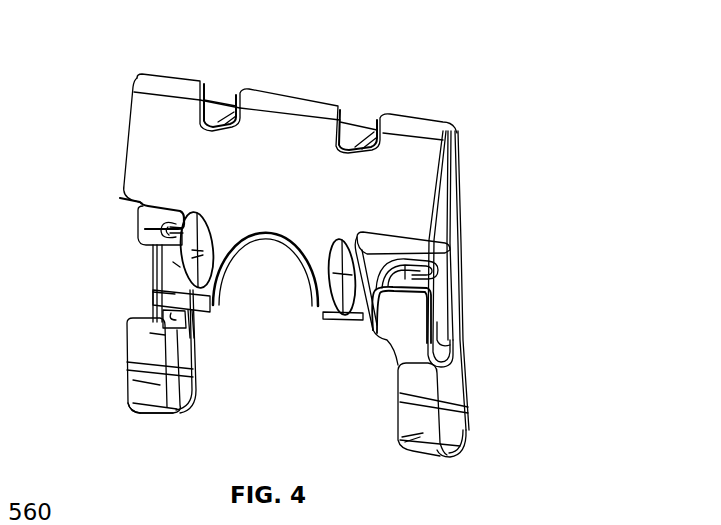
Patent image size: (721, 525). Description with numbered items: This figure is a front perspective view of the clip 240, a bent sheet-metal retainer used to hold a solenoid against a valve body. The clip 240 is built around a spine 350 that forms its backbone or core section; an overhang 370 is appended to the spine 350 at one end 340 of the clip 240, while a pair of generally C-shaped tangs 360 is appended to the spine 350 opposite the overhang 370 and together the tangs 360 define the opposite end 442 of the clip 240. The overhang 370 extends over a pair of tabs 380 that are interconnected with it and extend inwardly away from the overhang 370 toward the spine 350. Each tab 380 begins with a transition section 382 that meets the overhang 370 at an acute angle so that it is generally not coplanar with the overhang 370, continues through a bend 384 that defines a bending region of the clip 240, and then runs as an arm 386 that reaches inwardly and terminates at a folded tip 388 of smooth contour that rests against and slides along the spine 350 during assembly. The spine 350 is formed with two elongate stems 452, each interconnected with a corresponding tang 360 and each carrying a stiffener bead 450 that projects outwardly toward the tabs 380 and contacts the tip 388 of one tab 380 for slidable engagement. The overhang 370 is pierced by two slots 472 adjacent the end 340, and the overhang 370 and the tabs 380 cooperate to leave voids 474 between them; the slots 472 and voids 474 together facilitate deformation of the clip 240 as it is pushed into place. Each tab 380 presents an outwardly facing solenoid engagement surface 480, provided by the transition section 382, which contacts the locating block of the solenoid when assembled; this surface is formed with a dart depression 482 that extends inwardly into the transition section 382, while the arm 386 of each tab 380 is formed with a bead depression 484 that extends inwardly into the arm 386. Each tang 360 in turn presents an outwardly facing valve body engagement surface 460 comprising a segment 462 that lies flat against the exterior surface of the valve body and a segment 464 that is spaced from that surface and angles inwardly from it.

The clip 240 is at (350, 62).
The end of the clip 340 is at (427, 127).
The spine 350 is at (461, 160).
The tangs 360 is at (178, 382).
The overhang 370 is at (227, 147).
The tabs 380 is at (157, 277).
The transition section 382 is at (313, 270).
The bend 384 is at (212, 306).
The arm 386 is at (430, 302).
The tip 388 is at (453, 245).
The end of the clip 442 is at (167, 413).
The stiffener beads 450 is at (163, 316).
The elongate stem 452 is at (150, 260).
The valve body engagement surface 460 is at (153, 390).
The segment 462 is at (143, 383).
The segment 464 is at (150, 333).
The slots 472 is at (217, 100).
The voids 474 is at (180, 217).
The solenoid engagement surface 480 is at (173, 292).
The dart depression 482 is at (207, 238).
The bead depression 484 is at (420, 268).